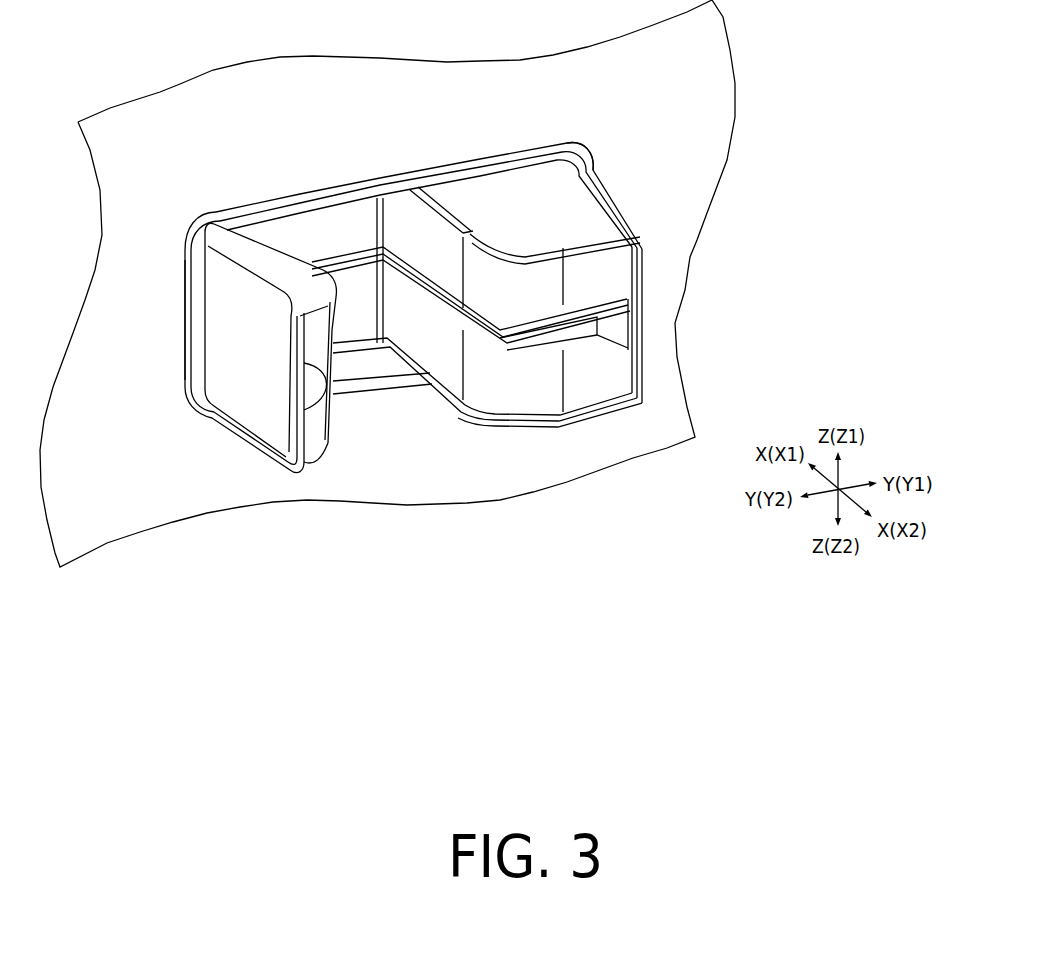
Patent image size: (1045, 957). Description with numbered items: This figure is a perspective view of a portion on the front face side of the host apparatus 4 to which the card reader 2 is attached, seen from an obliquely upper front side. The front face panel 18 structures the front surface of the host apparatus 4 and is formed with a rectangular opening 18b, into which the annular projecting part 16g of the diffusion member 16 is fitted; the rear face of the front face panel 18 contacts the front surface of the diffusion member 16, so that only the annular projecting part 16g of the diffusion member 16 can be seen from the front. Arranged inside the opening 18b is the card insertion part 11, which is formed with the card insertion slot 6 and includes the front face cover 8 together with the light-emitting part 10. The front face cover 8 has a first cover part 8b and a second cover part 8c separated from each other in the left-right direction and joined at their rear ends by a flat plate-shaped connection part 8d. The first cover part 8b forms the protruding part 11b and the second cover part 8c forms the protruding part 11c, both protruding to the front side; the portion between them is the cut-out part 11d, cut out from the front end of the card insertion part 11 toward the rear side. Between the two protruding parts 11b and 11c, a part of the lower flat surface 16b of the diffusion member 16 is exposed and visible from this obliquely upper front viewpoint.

The card reader 2 is at (498, 418).
The host apparatus 4 is at (180, 97).
The card insertion slot 6 is at (586, 349).
The front face cover 8 is at (641, 273).
The first cover part 8b is at (637, 325).
The second cover part 8c is at (290, 468).
The connection part 8d is at (337, 217).
The light-emitting part 10 is at (253, 213).
The card insertion part 11 is at (610, 200).
The protruding part 11b is at (641, 323).
The protruding part 11c is at (243, 427).
The cut-out part 11d is at (390, 407).
The diffusion member 16 is at (471, 295).
The flat surface 16b is at (368, 362).
The annular projecting part 16g is at (587, 153).
The front face panel 18 is at (244, 342).
The opening 18b is at (187, 347).